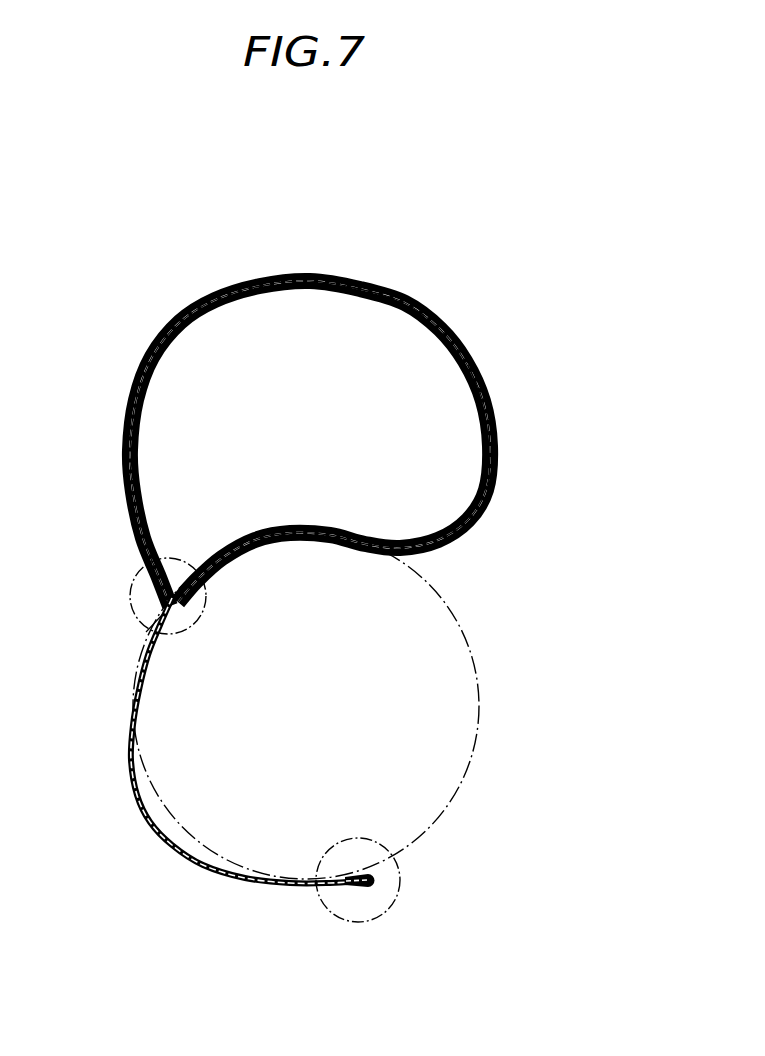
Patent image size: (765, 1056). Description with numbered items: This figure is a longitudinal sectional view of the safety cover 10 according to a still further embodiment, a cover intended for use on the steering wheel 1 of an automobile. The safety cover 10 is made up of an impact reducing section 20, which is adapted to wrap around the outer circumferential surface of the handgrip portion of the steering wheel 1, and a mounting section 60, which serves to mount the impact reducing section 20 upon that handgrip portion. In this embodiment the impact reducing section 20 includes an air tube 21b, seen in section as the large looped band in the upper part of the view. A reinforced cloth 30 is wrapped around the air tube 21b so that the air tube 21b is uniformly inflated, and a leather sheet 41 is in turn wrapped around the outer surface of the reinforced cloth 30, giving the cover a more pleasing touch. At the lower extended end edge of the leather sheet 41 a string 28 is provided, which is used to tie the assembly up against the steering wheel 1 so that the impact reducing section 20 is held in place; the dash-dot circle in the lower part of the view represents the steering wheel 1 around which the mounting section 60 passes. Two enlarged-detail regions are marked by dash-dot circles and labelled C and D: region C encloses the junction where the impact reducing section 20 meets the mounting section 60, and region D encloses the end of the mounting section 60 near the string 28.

The steering wheel 1 is at (460, 710).
The safety cover 10 is at (395, 280).
The impact reducing section 20 is at (168, 330).
The air tube 21b is at (438, 306).
The leather sheet 41 is at (486, 389).
The reinforced cloth 30 is at (499, 468).
The mounting section 60 is at (131, 755).
The string 28 is at (376, 881).
The detail region C is at (132, 616).
The detail region D is at (345, 921).